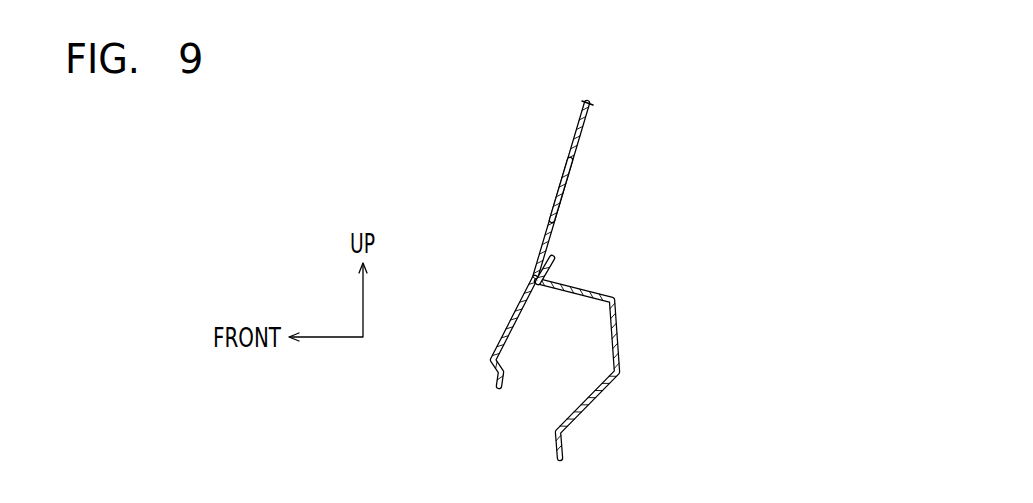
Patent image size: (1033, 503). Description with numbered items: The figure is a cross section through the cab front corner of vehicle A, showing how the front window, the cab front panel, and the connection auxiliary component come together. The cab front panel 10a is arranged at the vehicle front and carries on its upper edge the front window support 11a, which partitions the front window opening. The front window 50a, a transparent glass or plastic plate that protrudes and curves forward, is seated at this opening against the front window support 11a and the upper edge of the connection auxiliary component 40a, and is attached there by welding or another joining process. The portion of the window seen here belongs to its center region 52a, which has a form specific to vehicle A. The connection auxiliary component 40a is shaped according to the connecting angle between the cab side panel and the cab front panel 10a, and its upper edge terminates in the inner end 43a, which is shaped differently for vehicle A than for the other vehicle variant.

The front window 50a is at (568, 152).
The center region 52a is at (552, 208).
The front window support 11a is at (533, 279).
The cab front panel 10a is at (502, 318).
The inner end 43a is at (553, 268).
The connection auxiliary component 40a is at (622, 345).
The vehicle A is at (722, 392).